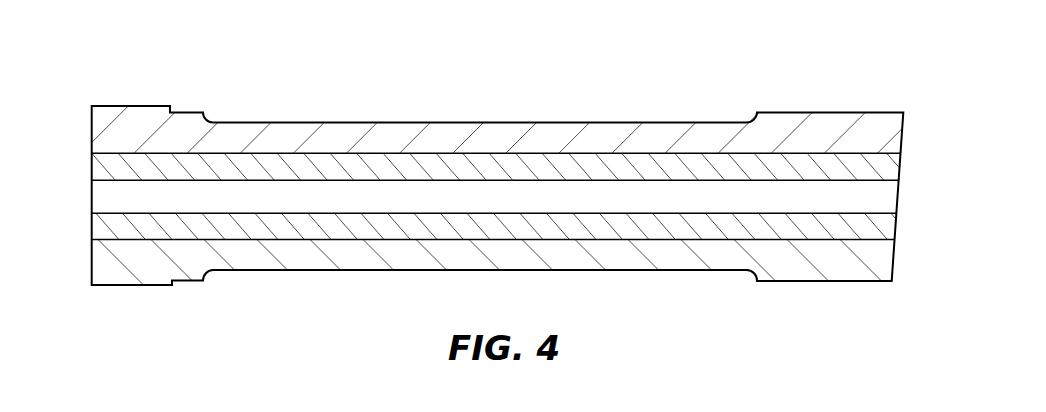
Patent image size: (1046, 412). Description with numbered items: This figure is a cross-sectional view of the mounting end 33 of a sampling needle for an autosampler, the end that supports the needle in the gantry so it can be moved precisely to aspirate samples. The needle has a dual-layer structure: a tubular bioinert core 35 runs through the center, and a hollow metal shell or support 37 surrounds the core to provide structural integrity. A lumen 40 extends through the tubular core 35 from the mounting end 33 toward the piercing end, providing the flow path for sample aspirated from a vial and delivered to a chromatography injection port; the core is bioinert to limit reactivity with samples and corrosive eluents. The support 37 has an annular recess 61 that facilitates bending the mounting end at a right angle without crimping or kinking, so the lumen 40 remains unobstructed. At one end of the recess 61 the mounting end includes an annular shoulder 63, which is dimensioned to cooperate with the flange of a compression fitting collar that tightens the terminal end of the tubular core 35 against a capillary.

The mounting end 33 is at (272, 84).
The annular recess 61 is at (507, 122).
The tubular bioinert core 35 is at (643, 170).
The hollow metal shell or support 37 is at (822, 127).
The lumen 40 is at (648, 211).
The annular shoulder 63 is at (176, 284).